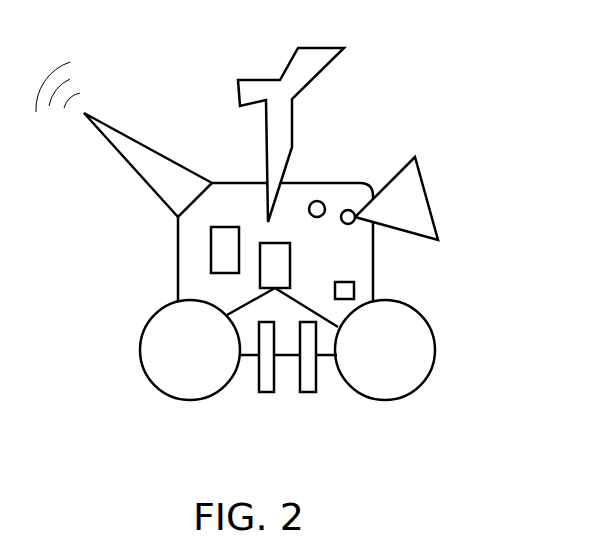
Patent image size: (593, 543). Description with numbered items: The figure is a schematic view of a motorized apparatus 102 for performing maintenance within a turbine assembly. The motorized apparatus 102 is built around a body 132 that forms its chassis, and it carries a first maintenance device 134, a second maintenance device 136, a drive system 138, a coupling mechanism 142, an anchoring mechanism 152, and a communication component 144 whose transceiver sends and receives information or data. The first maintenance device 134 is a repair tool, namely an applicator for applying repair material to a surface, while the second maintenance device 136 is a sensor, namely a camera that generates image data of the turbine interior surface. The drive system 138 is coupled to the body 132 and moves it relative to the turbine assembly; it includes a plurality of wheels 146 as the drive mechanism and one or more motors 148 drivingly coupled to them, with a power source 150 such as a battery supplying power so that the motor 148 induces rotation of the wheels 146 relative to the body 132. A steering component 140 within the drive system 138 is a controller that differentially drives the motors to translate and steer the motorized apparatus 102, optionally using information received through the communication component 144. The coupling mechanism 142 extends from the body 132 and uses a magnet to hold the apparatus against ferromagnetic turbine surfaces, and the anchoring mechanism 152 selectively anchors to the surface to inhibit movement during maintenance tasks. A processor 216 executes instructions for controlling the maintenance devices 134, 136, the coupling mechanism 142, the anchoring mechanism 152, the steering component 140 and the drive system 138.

The motorized apparatus 102 is at (431, 54).
The body 132 is at (177, 278).
The first maintenance device 134 is at (253, 78).
The second maintenance device 136 is at (432, 200).
The drive system 138 is at (116, 359).
The steering component 140 is at (210, 249).
The coupling mechanism 142 is at (265, 394).
The communication component 144 is at (152, 147).
The wheels 146 is at (190, 401).
The motor 148 is at (291, 263).
The power source 150 is at (317, 200).
The anchoring mechanism 152 is at (307, 394).
The processor 216 is at (355, 288).